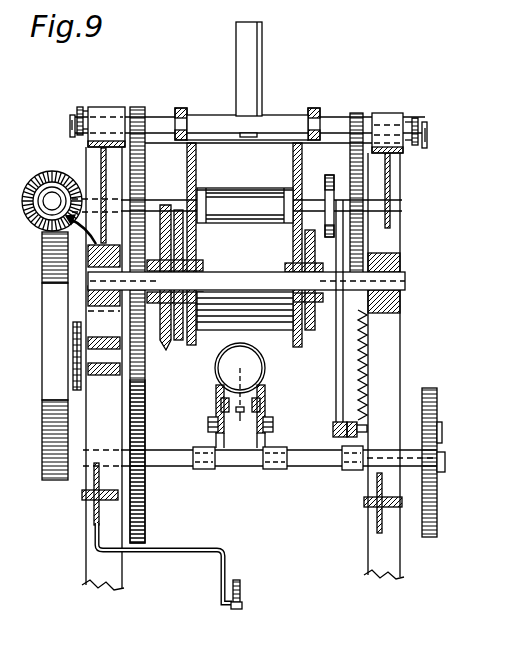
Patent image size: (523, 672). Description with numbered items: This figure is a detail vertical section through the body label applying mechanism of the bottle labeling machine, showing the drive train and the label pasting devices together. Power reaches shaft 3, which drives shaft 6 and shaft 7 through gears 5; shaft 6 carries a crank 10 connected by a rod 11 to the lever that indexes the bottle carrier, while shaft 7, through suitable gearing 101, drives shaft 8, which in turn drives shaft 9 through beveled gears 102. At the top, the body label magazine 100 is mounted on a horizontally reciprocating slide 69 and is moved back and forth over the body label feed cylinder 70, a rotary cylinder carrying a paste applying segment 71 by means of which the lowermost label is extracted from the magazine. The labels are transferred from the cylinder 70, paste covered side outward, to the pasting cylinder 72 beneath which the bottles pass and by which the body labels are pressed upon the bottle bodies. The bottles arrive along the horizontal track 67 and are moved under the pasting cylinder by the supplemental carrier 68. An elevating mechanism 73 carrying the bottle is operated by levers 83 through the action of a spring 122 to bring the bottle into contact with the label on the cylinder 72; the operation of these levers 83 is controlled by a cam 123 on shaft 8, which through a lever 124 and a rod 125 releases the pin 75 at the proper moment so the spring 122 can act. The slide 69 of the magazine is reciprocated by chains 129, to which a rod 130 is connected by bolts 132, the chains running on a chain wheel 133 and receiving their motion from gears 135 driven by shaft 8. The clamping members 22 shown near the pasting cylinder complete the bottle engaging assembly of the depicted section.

The shaft 3 is at (157, 366).
The gears 5 is at (142, 411).
The shaft 6 is at (333, 468).
The shaft 7 is at (246, 281).
The shaft 8 is at (245, 205).
The shaft 9 is at (38, 221).
The crank 10 is at (446, 473).
The rod 11 is at (443, 432).
The ring 22 is at (224, 368).
The horizontal track 67 is at (219, 407).
The supplemental carrier 68 is at (237, 628).
The horizontally reciprocating slide 69 is at (290, 118).
The body label feed cylinder 70 is at (292, 166).
The paste applying segment 71 is at (261, 199).
The body label pasting cylinder 72 is at (292, 238).
The elevating mechanism 73 is at (215, 389).
The pin 75 is at (366, 427).
The levers 83 is at (268, 467).
The body label magazine 100 is at (265, 72).
The gearing 101 is at (146, 179).
The beveled gears 102 is at (83, 181).
The spring 122 is at (368, 350).
The cam 123 is at (330, 178).
The lever 124 is at (344, 244).
The rod 125 is at (336, 350).
The chains 129 is at (80, 106).
The rod 130 is at (70, 128).
The bolts 132 is at (72, 139).
The chain wheel 133 is at (85, 106).
The gears 135 is at (140, 106).